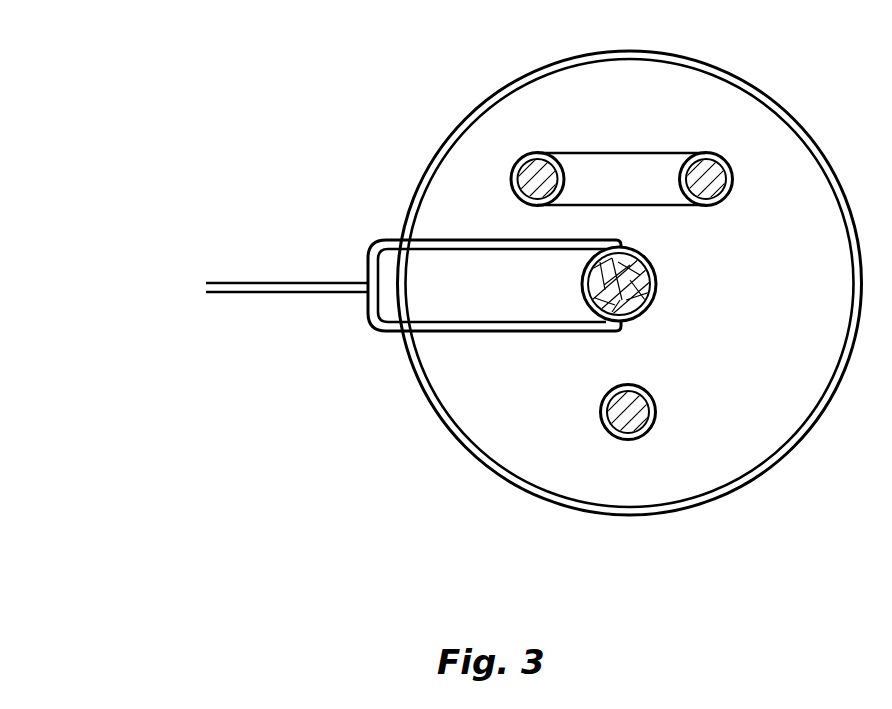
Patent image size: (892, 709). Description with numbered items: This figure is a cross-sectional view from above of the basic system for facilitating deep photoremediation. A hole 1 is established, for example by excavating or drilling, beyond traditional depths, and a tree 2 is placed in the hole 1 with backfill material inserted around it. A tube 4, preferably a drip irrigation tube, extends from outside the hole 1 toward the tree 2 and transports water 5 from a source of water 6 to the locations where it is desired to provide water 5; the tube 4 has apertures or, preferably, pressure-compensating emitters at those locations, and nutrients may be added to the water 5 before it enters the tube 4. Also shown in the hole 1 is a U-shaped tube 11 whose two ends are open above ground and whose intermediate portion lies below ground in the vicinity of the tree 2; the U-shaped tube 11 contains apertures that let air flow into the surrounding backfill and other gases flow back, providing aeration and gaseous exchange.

The hole 1 is at (435, 156).
The U-shaped tube 11 is at (729, 165).
The tree 2 is at (657, 278).
The tube 4 is at (375, 331).
The water 5 is at (188, 288).
The source of water 6 is at (98, 288).